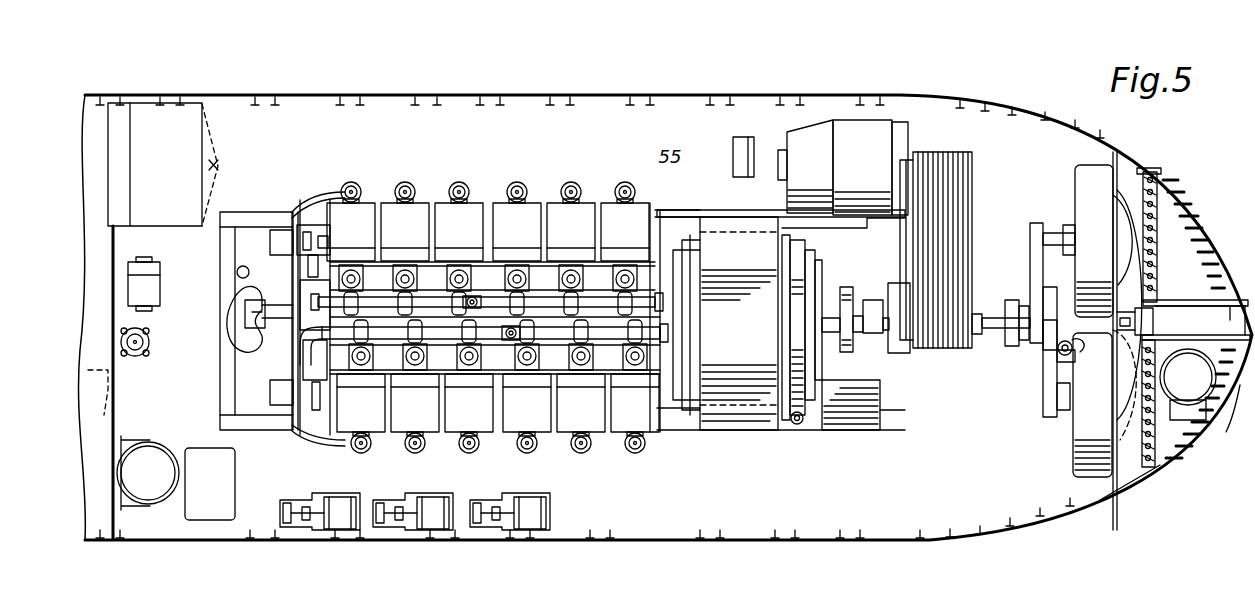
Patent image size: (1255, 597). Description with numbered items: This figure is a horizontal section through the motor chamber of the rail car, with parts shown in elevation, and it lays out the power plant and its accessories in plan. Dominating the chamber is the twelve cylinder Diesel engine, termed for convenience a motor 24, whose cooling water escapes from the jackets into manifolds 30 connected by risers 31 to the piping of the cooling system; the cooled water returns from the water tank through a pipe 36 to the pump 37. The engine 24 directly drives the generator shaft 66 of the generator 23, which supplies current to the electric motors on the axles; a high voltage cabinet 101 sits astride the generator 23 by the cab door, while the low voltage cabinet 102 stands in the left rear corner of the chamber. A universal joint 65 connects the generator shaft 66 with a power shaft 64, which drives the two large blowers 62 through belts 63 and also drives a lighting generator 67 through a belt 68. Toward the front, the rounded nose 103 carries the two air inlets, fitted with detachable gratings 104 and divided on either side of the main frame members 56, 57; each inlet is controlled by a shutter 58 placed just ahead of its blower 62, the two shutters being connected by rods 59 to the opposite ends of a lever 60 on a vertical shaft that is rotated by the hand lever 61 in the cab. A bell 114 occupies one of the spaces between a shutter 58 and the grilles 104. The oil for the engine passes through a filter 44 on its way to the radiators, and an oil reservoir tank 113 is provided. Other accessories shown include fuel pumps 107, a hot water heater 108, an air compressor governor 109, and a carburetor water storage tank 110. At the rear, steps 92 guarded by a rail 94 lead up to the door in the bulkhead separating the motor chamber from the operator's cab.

The generator 23 is at (815, 247).
The motor 24 is at (485, 196).
The manifolds 30 is at (628, 322).
The risers 31 is at (473, 296).
The pipe 36 is at (243, 265).
The pump 37 is at (245, 330).
The filter 44 is at (160, 280).
The main frame member 56 is at (1224, 310).
The main frame member 57 is at (1165, 310).
The shutter 58 is at (1160, 199).
The rods 59 is at (1130, 170).
The lever 60 is at (1153, 322).
The hand lever 61 is at (1060, 355).
The blower 62 is at (1100, 190).
The belts 63 is at (1030, 270).
The power shaft 64 is at (994, 340).
The universal joint 65 is at (870, 338).
The generator shaft 66 is at (862, 300).
The lighting generator 67 is at (843, 167).
The belt 68 is at (965, 201).
The steps 92 is at (853, 415).
The rail 94 is at (797, 424).
The high voltage cabinet 101 is at (718, 384).
The low voltage cabinet 102 is at (203, 143).
The rounded nose 103 is at (1205, 415).
The gratings 104 is at (1215, 224).
The fuel pumps 107 is at (366, 498).
The hot water heater 108 is at (150, 344).
The air compressor governor 109 is at (740, 143).
The carburetor water storage tank 110 is at (160, 452).
The oil reservoir tank 113 is at (235, 466).
The bell 114 is at (1203, 388).